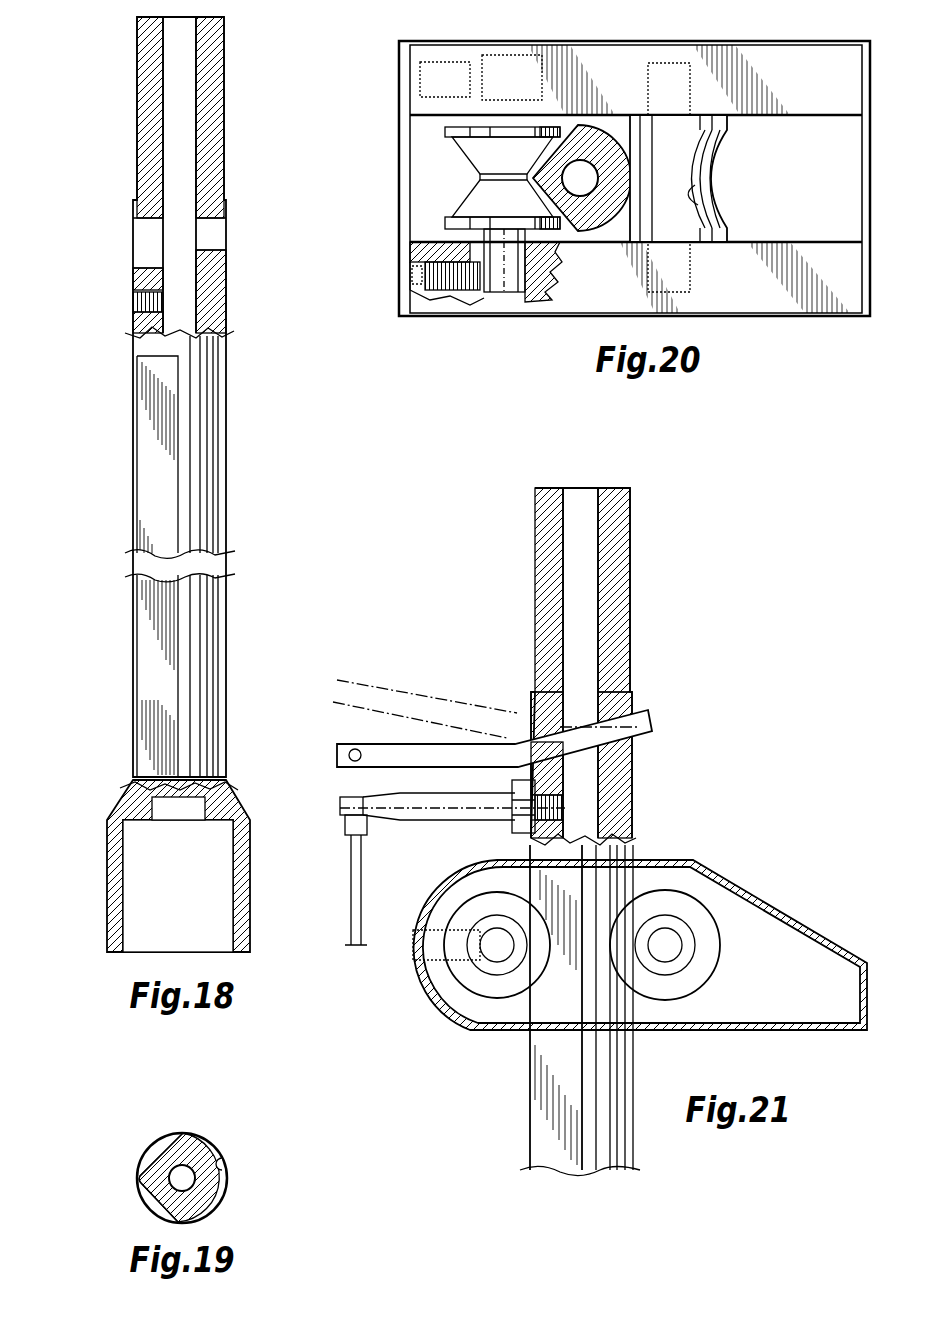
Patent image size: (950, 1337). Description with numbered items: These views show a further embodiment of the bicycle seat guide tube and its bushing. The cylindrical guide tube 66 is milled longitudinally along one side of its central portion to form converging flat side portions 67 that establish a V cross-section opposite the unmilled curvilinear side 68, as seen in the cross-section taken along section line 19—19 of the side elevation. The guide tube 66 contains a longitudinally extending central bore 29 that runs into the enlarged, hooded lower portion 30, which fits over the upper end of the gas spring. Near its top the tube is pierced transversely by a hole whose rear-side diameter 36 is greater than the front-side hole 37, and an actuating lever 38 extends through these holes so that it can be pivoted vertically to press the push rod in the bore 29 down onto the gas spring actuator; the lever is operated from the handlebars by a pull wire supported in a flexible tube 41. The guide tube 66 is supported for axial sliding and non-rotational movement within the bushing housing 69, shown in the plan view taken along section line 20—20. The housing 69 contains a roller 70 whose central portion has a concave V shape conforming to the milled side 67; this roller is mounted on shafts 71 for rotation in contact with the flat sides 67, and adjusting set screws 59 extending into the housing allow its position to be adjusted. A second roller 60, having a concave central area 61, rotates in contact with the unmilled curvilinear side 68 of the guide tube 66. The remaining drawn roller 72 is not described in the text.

In FIG. 18, the guide tube 19 is at (112, 640).
In FIG. 21, the split bushing 20 is at (390, 893).
In FIG. 18, the central bore 29 is at (196, 298).
In FIG. 20, the central bore 29 is at (583, 170).
In FIG. 21, the central bore 29 is at (598, 818).
In FIG. 18, the hooded lower portion 30 is at (122, 807).
In FIG. 21, the hole diameter on rear side 36 is at (632, 735).
In FIG. 21, the hole on front side 37 is at (522, 730).
In FIG. 21, the actuating lever 38 is at (397, 744).
In FIG. 21, the flexible tube 41 is at (349, 905).
In FIG. 20, the adjusting set screws 59 is at (446, 298).
In FIG. 20, the roller 60 is at (715, 152).
In FIG. 20, the concave central area 61 is at (700, 198).
In FIG. 18, the guide tube 66 is at (238, 419).
In FIG. 19, the guide tube 66 is at (187, 1142).
In FIG. 20, the guide tube 66 is at (612, 180).
In FIG. 21, the guide tube 66 is at (622, 612).
In FIG. 18, the converging flat side portions 67 is at (157, 566).
In FIG. 19, the converging flat side portions 67 is at (140, 1205).
In FIG. 21, the converging flat side portions 67 is at (580, 1010).
In FIG. 18, the unmilled curvilinear side 68 is at (180, 556).
In FIG. 19, the unmilled curvilinear side 68 is at (225, 1170).
In FIG. 21, the unmilled curvilinear side 68 is at (614, 1007).
In FIG. 20, the bushing housing 69 is at (752, 306).
In FIG. 20, the roller 70 is at (455, 175).
In FIG. 21, the roller 70 is at (482, 1000).
In FIG. 20, the shafts 71 is at (500, 294).
In FIG. 21, the second pulley 72 is at (697, 990).